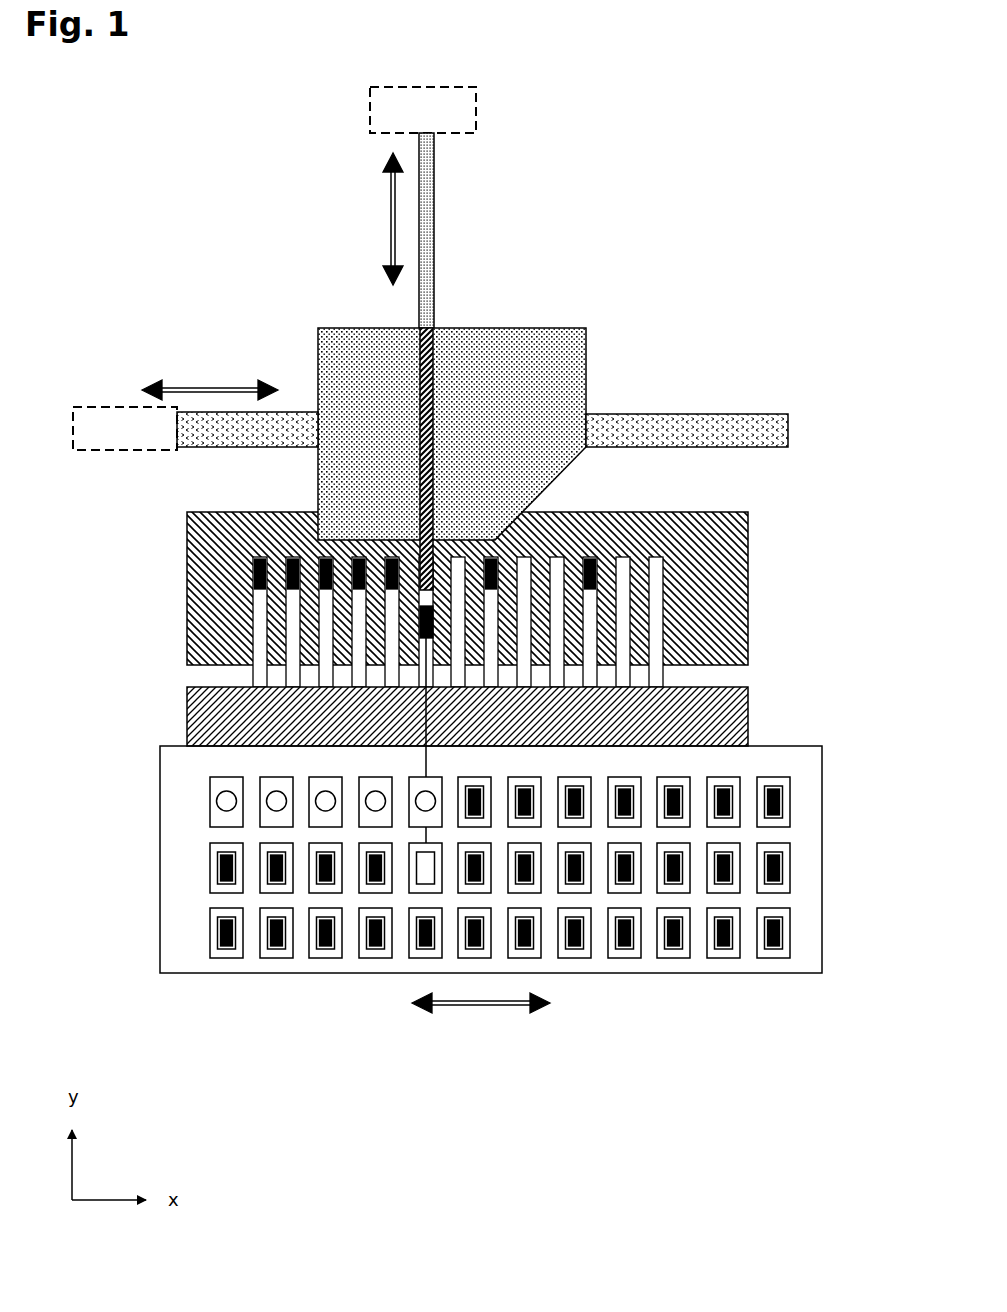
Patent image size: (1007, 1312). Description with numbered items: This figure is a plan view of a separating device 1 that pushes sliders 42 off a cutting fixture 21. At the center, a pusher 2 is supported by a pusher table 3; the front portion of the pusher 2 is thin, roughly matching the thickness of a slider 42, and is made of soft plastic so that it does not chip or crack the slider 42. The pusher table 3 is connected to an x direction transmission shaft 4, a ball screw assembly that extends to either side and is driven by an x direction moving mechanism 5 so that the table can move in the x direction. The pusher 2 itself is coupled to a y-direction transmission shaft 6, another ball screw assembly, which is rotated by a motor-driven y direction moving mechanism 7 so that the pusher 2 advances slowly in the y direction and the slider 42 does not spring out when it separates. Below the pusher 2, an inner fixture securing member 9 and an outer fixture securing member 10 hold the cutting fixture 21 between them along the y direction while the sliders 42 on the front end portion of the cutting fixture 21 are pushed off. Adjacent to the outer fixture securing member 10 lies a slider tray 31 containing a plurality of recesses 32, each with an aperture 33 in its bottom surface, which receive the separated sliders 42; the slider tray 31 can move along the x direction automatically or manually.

The separating device 1 is at (667, 194).
The pusher 2 is at (433, 202).
The pusher table 3 is at (545, 328).
The x direction transmission shaft 4 is at (228, 447).
The x direction moving mechanism 5 is at (72, 418).
The y-direction transmission shaft 6 is at (434, 222).
The y direction moving mechanism 7 is at (476, 119).
The inner fixture securing member 9 is at (750, 628).
The outer fixture securing member 10 is at (750, 717).
The cutting fixture 21 is at (665, 605).
The slider tray 31 is at (633, 973).
The recess 32 is at (213, 958).
The aperture 33 is at (217, 802).
The slider 42 is at (620, 560).